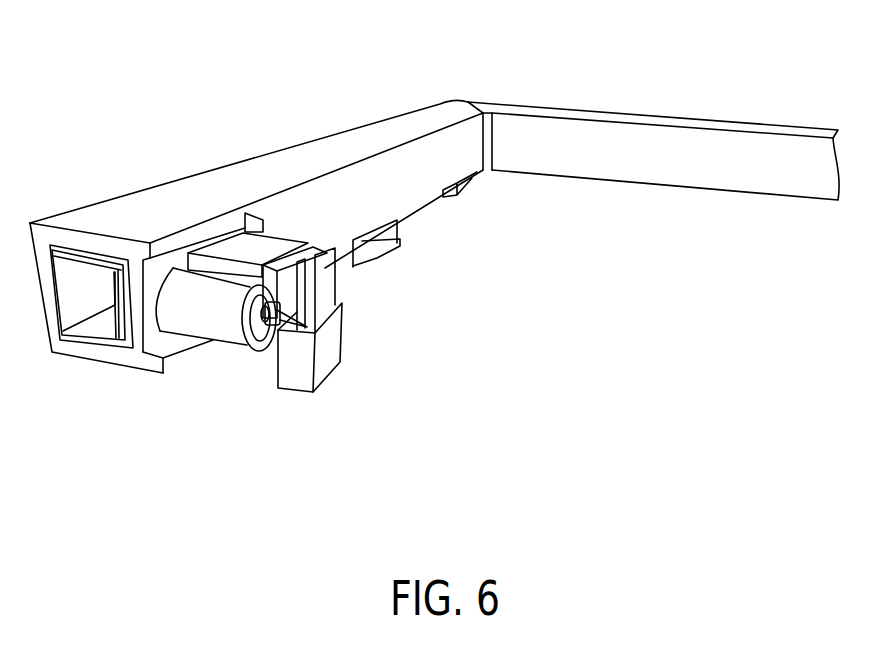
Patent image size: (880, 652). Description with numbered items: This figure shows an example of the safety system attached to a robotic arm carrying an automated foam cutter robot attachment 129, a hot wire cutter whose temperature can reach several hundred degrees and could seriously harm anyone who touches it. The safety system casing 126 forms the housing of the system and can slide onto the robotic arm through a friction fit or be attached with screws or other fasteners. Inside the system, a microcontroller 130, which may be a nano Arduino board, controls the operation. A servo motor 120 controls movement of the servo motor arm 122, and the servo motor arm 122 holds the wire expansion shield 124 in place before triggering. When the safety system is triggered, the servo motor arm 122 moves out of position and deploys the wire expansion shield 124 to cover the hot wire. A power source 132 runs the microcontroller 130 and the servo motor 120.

The servo motor 120 is at (312, 280).
The servo motor arm 122 is at (320, 382).
The wire expansion shield 124 is at (250, 342).
The safety system casing 126 is at (128, 352).
The automated foam cutter robot attachment 129 is at (358, 107).
The microcontroller 130 is at (400, 241).
The power source 132 is at (487, 165).